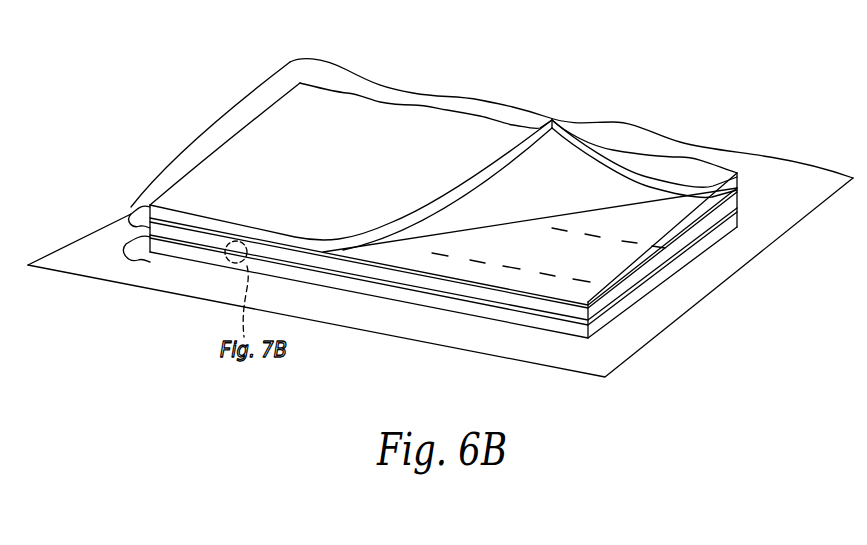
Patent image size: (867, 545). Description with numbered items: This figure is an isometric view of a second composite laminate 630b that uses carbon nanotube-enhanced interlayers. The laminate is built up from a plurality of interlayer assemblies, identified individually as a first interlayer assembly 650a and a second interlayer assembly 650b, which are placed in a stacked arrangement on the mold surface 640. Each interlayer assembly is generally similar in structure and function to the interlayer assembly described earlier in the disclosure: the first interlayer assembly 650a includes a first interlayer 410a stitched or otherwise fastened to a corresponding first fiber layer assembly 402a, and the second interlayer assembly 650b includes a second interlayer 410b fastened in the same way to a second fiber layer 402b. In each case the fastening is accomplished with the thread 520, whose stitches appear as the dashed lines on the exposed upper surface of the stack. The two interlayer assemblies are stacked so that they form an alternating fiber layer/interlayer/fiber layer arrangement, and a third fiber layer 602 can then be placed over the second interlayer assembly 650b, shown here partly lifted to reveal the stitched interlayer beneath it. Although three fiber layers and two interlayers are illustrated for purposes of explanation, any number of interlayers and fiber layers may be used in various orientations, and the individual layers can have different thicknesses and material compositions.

The second composite laminate 630b is at (566, 68).
The mold surface 640 is at (277, 82).
The third fiber layer 602 is at (240, 153).
The second interlayer 410b is at (687, 232).
The second fiber layer 402b is at (650, 268).
The first interlayer 410a is at (620, 298).
The first fiber layer assembly 402a is at (603, 318).
The thread 520 is at (543, 275).
The second interlayer assembly 650b is at (130, 217).
The first interlayer assembly 650a is at (118, 252).